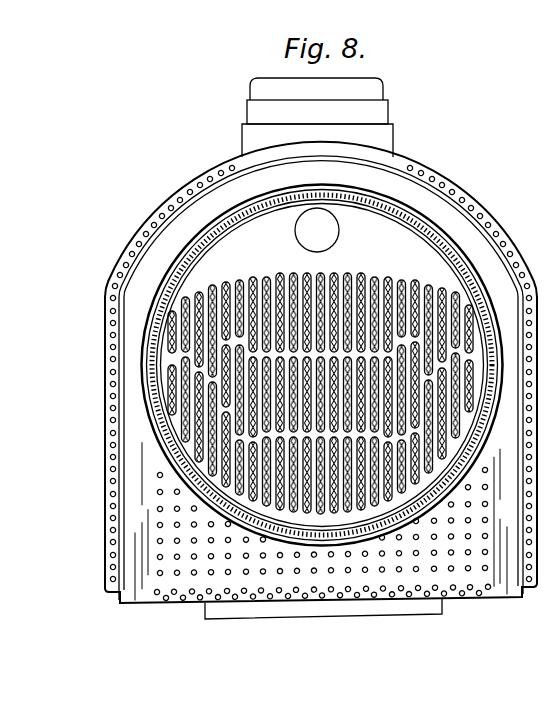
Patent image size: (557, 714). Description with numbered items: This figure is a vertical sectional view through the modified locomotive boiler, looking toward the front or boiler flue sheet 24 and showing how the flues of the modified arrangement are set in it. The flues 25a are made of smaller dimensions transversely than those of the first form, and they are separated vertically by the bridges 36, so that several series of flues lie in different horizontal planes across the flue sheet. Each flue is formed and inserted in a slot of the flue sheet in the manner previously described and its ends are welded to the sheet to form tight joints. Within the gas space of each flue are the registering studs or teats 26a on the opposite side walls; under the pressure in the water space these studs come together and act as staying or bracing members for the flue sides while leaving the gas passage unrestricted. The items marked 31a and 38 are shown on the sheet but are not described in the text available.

The front or boiler flue sheet 24 is at (231, 240).
The annular flange ring 31a is at (200, 292).
The flues 25a is at (188, 322).
The bridges 36 is at (182, 352).
The stay tube 38 is at (170, 328).
The registering studs or teats 26a is at (172, 398).